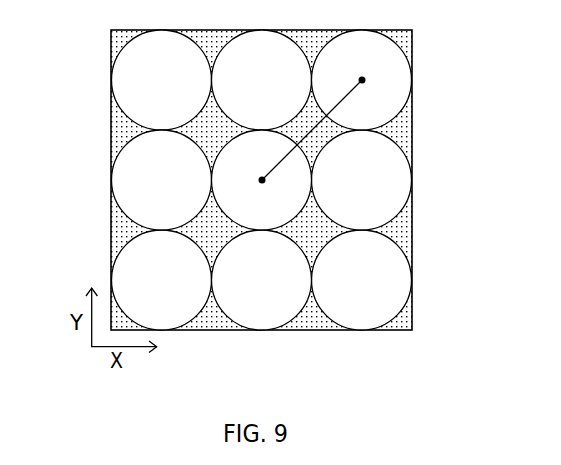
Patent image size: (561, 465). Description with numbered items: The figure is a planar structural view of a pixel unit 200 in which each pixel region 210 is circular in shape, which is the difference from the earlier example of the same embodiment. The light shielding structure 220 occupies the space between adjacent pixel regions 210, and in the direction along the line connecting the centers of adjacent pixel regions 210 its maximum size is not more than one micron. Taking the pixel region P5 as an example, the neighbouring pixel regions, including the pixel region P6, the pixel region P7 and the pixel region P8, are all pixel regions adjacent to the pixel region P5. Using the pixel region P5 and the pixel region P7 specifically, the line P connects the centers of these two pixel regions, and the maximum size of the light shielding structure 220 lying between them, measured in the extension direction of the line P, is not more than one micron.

The pixel unit 200 is at (226, 180).
The pixel region 210 is at (127, 80).
The light shielding structure 220 is at (130, 180).
The line connecting centers P is at (331, 160).
The pixel region P5 is at (386, 80).
The pixel region P6 is at (362, 180).
The pixel region P7 is at (239, 290).
The pixel region P8 is at (262, 80).